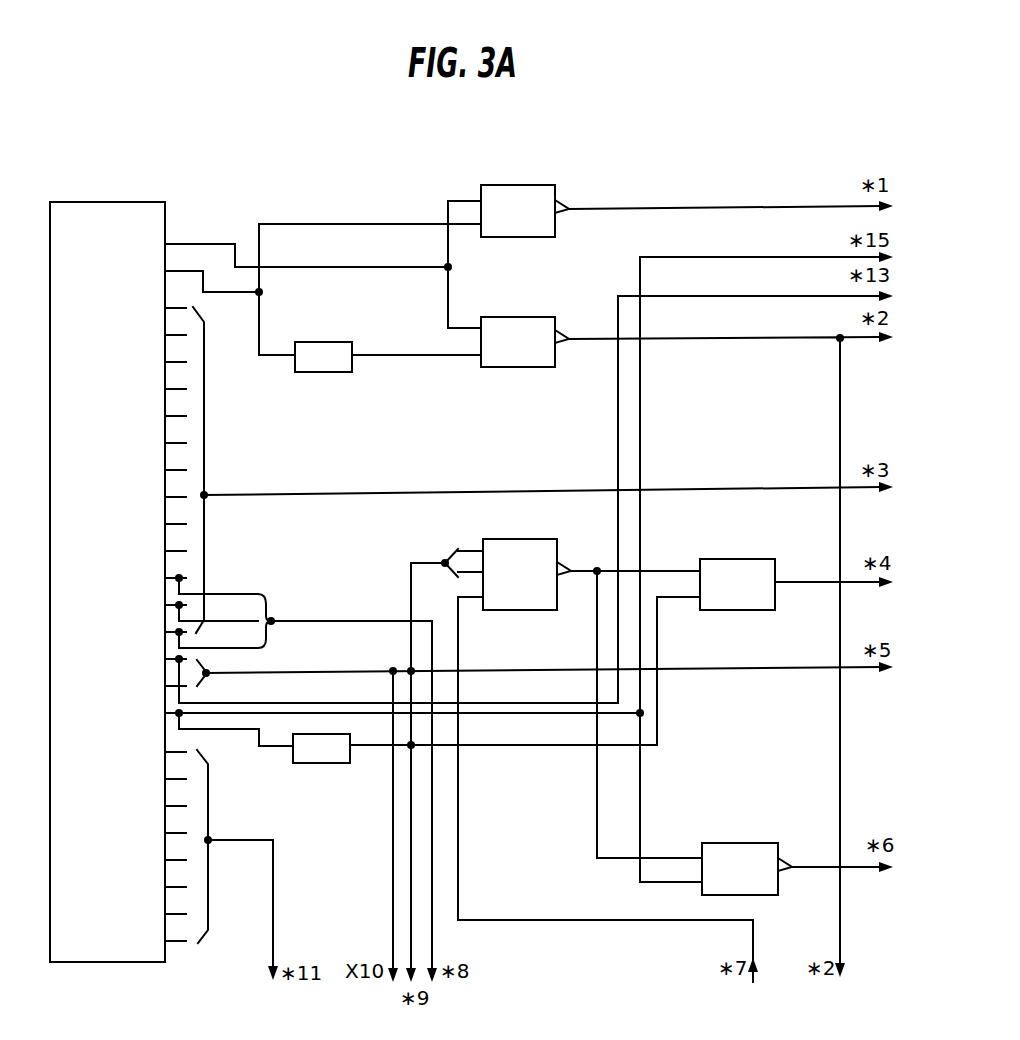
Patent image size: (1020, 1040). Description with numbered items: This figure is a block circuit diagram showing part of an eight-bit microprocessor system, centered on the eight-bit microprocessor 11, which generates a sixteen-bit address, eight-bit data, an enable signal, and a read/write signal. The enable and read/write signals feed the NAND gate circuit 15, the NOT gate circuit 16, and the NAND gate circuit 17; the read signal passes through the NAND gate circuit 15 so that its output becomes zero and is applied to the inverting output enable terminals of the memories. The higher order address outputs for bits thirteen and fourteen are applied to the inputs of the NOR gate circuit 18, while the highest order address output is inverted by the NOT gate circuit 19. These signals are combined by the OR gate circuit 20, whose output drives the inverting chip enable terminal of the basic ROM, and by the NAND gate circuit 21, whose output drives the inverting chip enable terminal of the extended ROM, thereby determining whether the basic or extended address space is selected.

The eight-bit microprocessor 11 is at (105, 202).
The NAND gate circuit 15 is at (548, 186).
The NOT gate circuit 16 is at (346, 343).
The NAND gate circuit 17 is at (548, 318).
The NOR gate circuit 18 is at (550, 540).
The NOT gate circuit 19 is at (293, 752).
The OR gate circuit 20 is at (770, 560).
The NAND gate circuit 21 is at (772, 844).